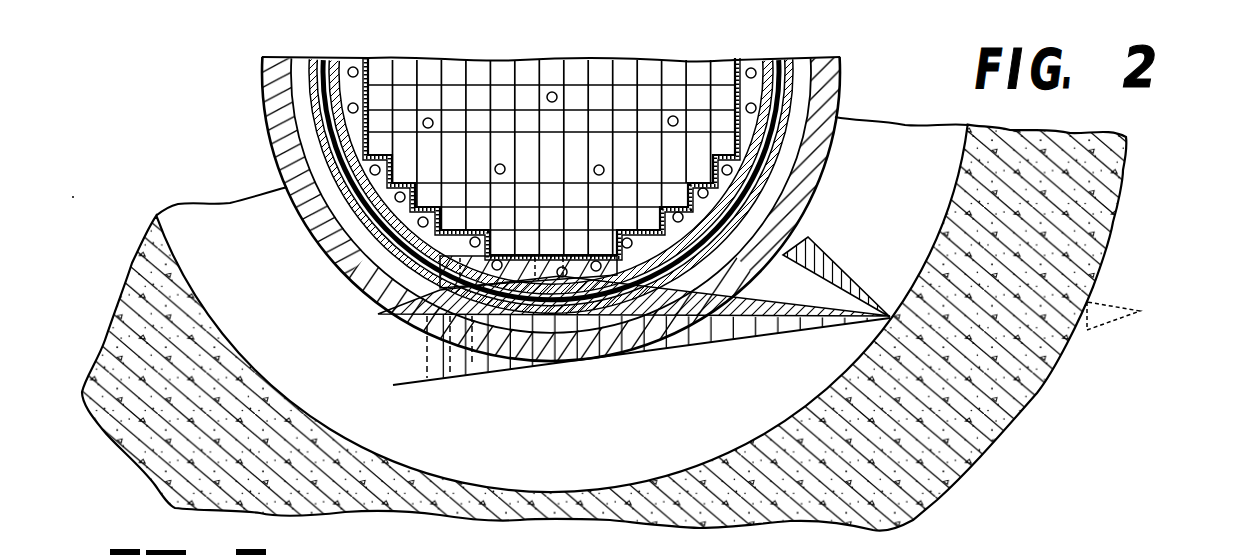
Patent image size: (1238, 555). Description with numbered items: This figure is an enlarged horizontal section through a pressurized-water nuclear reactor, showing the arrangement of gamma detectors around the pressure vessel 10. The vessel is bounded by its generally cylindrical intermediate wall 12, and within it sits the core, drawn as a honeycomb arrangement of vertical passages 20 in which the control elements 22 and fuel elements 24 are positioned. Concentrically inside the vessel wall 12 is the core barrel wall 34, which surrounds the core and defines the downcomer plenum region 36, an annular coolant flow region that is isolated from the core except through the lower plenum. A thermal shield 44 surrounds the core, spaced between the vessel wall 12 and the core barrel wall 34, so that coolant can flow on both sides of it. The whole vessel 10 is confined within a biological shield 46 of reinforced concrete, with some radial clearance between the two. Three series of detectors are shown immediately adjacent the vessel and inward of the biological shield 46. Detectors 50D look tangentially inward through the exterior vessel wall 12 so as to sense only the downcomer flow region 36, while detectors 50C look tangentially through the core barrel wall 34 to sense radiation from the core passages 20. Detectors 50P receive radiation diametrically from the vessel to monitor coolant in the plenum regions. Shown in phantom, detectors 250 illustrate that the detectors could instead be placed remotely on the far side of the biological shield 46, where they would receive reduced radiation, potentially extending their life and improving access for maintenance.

The pressure vessel 10 is at (232, 95).
The cylindrical intermediate wall 12 is at (282, 136).
The vertical passages 20 is at (523, 153).
The control elements 22 is at (359, 107).
The fuel elements 24 is at (500, 163).
The core barrel wall 34 is at (783, 88).
The downcomer plenum region 36 is at (787, 147).
The thermal shield 44 is at (773, 110).
The biological shield 46 is at (1085, 172).
The detectors (series P) 50P is at (830, 262).
The detectors (series C) 50C is at (818, 306).
The detectors (series D) 50D is at (771, 335).
The detectors (remote position) 250 is at (1110, 318).